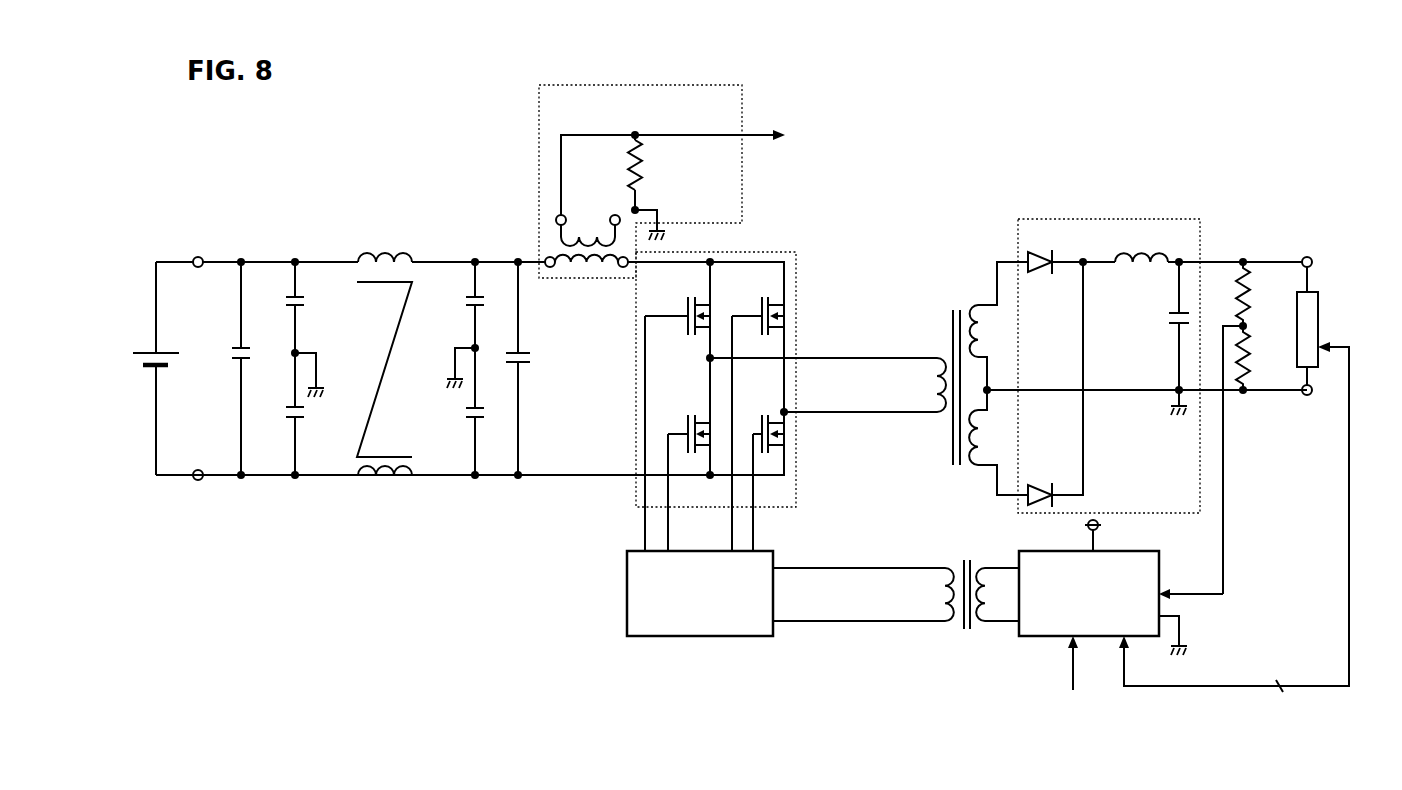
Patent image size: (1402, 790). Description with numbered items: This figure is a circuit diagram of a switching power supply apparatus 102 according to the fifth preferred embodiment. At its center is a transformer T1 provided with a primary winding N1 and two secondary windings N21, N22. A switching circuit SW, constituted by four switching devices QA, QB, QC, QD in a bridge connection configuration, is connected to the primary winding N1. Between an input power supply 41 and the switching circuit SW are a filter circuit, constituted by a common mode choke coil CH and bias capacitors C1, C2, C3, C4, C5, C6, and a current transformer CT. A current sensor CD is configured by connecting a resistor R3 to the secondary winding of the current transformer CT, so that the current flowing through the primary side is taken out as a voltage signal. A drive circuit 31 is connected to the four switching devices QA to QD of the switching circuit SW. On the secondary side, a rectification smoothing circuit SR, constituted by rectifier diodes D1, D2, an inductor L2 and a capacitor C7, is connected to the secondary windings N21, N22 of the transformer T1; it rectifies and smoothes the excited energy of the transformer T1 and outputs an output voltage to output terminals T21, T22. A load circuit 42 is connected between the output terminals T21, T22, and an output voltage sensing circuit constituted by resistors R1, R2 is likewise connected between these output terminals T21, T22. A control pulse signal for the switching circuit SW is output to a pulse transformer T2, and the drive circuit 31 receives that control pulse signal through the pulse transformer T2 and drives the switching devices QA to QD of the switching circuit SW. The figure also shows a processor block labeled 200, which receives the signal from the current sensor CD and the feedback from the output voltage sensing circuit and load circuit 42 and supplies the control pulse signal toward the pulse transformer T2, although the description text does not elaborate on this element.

The switching power supply apparatus 102 is at (1124, 110).
The input power supply 41 is at (134, 368).
The drive circuit 31 is at (773, 551).
The processor 200 is at (1159, 551).
The load circuit 42 is at (1319, 332).
The bias capacitor C1 is at (224, 368).
The bias capacitor C2 is at (311, 307).
The bias capacitor C3 is at (310, 414).
The bias capacitor C4 is at (459, 305).
The bias capacitor C5 is at (459, 411).
The bias capacitor C6 is at (532, 368).
The capacitor C7 is at (1164, 338).
The common mode choke coil CH is at (395, 244).
The current transformer CT is at (557, 251).
The current sensor CD is at (662, 157).
The resistor R3 is at (619, 165).
The switching circuit SW is at (786, 374).
The switching device QA is at (677, 420).
The switching device QB is at (684, 474).
The switching device QC is at (755, 420).
The switching device QD is at (761, 474).
The transformer T1 is at (965, 377).
The primary winding N1 is at (925, 385).
The secondary winding N21 is at (999, 326).
The secondary winding N22 is at (998, 442).
The pulse transformer T2 is at (967, 640).
The rectification smoothing circuit SR is at (1147, 341).
The rectifier diode D1 is at (1040, 250).
The rectifier diode D2 is at (1041, 484).
The inductor L2 is at (1208, 246).
The resistor R1 is at (1258, 294).
The resistor R2 is at (1258, 358).
The output terminal T21 is at (1311, 256).
The output terminal T22 is at (1304, 397).